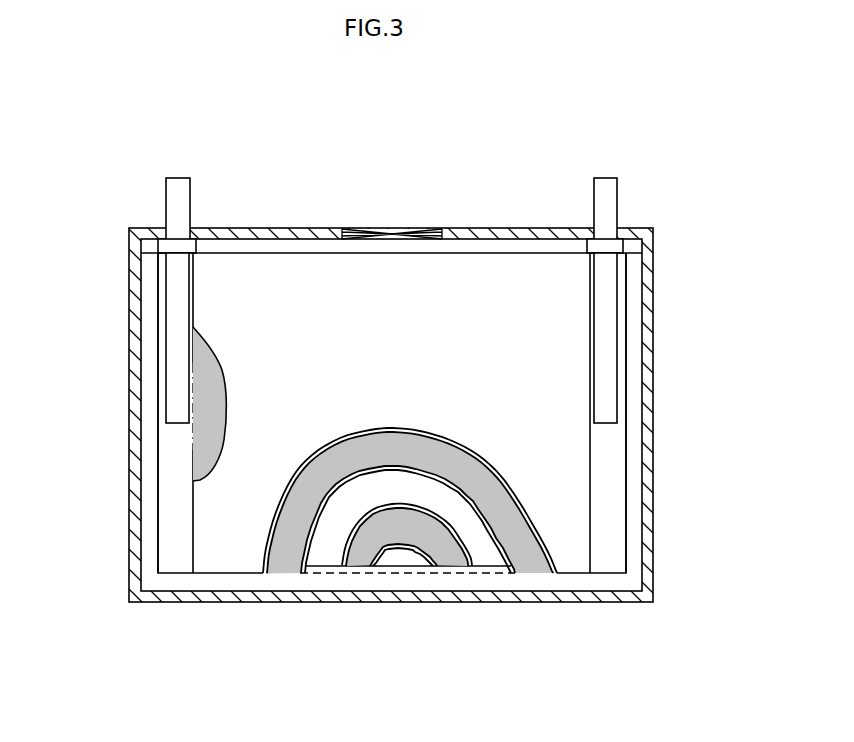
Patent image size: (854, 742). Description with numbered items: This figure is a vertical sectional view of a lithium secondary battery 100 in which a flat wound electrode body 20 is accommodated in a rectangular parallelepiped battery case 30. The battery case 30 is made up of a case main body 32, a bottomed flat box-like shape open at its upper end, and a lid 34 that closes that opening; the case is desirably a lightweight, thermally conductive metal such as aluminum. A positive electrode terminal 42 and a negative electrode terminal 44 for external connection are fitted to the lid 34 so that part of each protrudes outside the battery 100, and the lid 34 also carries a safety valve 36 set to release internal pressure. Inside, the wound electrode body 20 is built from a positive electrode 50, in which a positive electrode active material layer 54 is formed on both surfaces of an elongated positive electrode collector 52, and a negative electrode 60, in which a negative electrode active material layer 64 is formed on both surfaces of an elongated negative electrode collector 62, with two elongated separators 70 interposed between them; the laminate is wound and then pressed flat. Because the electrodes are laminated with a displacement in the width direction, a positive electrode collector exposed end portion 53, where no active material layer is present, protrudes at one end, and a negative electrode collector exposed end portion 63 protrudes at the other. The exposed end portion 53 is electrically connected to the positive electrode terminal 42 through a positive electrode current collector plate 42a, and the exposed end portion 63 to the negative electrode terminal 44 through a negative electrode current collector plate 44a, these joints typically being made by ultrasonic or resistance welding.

The battery 100 is at (655, 197).
The wound electrode body 20 is at (283, 284).
The battery case 30 is at (655, 331).
The case main body 32 is at (653, 583).
The lid 34 is at (556, 228).
The safety valve 36 is at (392, 229).
The positive electrode terminal 42 is at (178, 182).
The positive electrode current collector plate 42a is at (178, 318).
The negative electrode terminal 44 is at (605, 182).
The negative electrode current collector plate 44a is at (606, 286).
The positive electrode 50 is at (285, 557).
The positive electrode collector 52 is at (172, 470).
The positive electrode collector exposed end portion 53 is at (173, 550).
The positive electrode active material layer 54 is at (213, 380).
The negative electrode 60 is at (358, 555).
The negative electrode collector 62 is at (627, 434).
The negative electrode collector exposed end portion 63 is at (612, 478).
The negative electrode active material layer 64 is at (401, 610).
The separator 70 is at (228, 508).